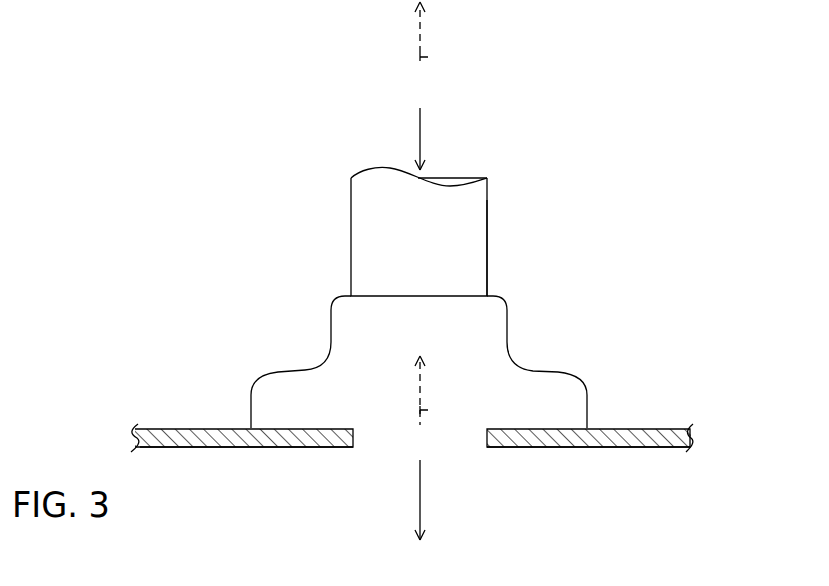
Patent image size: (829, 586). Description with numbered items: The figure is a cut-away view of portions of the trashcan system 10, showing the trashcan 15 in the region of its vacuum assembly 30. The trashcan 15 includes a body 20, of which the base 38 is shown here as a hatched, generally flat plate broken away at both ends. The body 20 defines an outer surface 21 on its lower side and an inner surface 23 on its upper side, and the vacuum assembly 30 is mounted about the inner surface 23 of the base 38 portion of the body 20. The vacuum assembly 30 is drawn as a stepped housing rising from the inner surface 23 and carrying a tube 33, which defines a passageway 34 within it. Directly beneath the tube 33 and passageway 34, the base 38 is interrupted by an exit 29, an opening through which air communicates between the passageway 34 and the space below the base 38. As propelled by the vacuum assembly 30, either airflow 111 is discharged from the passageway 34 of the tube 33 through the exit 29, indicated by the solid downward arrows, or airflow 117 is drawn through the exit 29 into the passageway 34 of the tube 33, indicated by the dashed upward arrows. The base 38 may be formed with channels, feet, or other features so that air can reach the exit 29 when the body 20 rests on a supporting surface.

The trashcan system 10 is at (670, 218).
The trashcan 15 is at (685, 265).
The body 20 is at (650, 447).
The outer surface 21 is at (210, 447).
The inner surface 23 is at (200, 428).
The exit 29 is at (390, 438).
The vacuum assembly 30 is at (508, 328).
The tube 33 is at (487, 220).
The passageway 34 is at (431, 237).
The base 38 is at (645, 428).
The airflow 111 is at (421, 117).
The airflow 117 is at (432, 55).